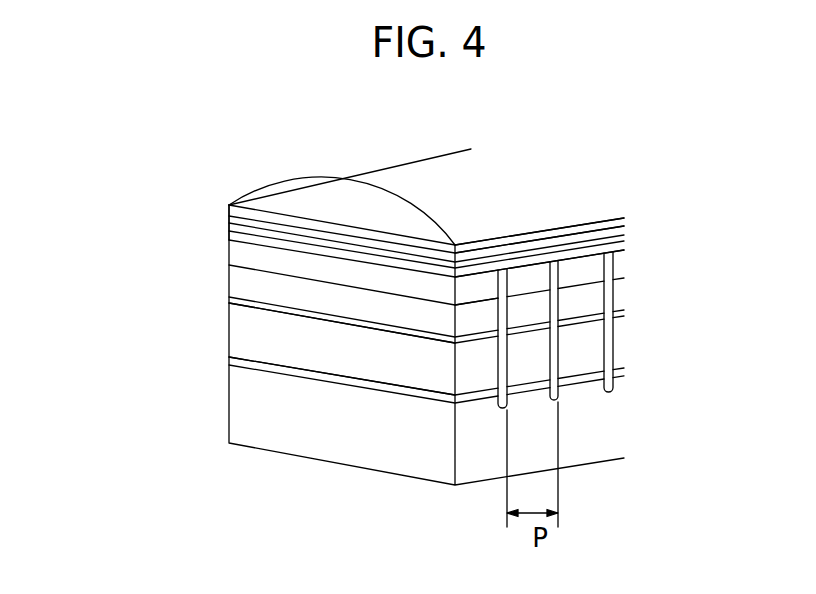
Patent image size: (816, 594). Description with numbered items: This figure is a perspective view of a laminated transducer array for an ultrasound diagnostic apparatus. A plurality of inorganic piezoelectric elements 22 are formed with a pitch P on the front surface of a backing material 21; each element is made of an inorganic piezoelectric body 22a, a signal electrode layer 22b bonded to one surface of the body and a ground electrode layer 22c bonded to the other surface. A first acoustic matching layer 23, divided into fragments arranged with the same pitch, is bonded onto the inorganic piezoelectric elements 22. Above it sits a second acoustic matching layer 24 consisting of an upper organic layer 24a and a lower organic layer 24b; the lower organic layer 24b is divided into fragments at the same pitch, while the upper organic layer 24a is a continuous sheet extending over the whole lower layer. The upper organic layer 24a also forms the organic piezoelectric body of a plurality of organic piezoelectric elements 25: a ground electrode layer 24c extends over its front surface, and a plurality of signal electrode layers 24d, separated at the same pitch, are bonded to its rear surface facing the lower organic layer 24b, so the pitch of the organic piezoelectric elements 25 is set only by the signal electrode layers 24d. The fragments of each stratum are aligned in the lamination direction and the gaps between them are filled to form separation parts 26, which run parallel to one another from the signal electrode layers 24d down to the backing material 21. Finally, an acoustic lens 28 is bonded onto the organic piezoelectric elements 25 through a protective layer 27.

The backing material 21 is at (618, 424).
The inorganic piezoelectric elements 22 is at (635, 347).
The inorganic piezoelectric body 22a is at (228, 330).
The signal electrode layer 22b is at (229, 359).
The ground electrode layer 22c is at (229, 299).
The first acoustic matching layer 23 is at (625, 297).
The second acoustic matching layer 24 is at (713, 215).
The upper organic layer 24a is at (229, 220).
The lower organic layer 24b is at (625, 263).
The ground electrode layer 24c is at (229, 210).
The signal electrode layers 24d is at (229, 228).
The organic piezoelectric elements 25 is at (142, 177).
The separation parts 26 is at (498, 372).
The protective layer 27 is at (624, 221).
The acoustic lens 28 is at (390, 162).